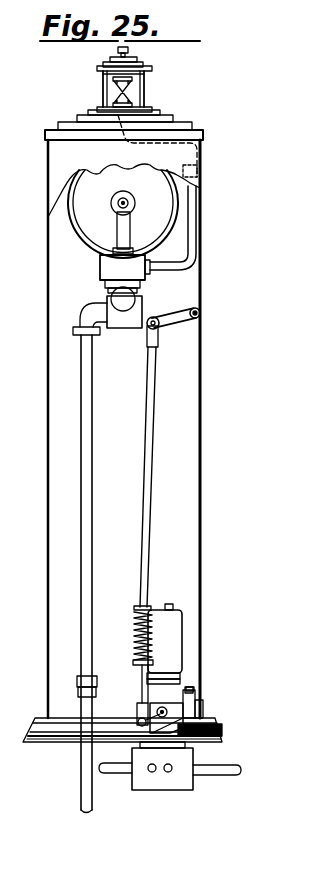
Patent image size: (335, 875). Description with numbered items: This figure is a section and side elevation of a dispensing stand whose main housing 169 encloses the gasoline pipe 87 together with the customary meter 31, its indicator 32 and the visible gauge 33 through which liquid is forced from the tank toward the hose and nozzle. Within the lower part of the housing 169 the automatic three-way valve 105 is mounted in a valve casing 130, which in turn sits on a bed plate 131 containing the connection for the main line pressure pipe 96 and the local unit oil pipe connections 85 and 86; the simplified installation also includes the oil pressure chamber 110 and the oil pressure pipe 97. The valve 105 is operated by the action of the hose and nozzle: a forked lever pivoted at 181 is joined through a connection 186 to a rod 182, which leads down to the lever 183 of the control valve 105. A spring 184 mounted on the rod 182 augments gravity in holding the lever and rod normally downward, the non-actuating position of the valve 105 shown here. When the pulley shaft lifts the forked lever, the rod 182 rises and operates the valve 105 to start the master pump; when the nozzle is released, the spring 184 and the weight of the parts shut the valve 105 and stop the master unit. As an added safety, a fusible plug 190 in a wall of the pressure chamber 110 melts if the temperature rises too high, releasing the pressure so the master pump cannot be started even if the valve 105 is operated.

The visible gauge 33 is at (138, 89).
The indicator 32 is at (83, 207).
The meter 31 is at (108, 273).
The pivot 181 is at (198, 311).
The connection 186 is at (158, 328).
The main housing 169 is at (202, 437).
The gasoline pipe 87 is at (88, 487).
The rod 182 is at (147, 518).
The fusible plug 190 is at (170, 604).
The spring 184 is at (152, 632).
The oil pressure chamber 110 is at (173, 647).
The three-way valve 105 is at (157, 710).
The lever 183 is at (174, 713).
The valve casing 130 is at (200, 723).
The oil pressure pipe 97 is at (107, 774).
The local unit oil pipe connection 86 is at (152, 773).
The local unit oil pipe connection 85 is at (170, 773).
The main line pressure pipe 96 is at (218, 771).
The bed plate 131 is at (157, 782).